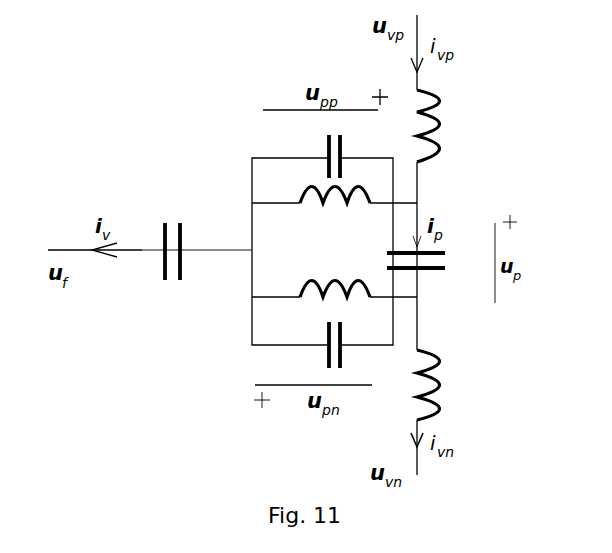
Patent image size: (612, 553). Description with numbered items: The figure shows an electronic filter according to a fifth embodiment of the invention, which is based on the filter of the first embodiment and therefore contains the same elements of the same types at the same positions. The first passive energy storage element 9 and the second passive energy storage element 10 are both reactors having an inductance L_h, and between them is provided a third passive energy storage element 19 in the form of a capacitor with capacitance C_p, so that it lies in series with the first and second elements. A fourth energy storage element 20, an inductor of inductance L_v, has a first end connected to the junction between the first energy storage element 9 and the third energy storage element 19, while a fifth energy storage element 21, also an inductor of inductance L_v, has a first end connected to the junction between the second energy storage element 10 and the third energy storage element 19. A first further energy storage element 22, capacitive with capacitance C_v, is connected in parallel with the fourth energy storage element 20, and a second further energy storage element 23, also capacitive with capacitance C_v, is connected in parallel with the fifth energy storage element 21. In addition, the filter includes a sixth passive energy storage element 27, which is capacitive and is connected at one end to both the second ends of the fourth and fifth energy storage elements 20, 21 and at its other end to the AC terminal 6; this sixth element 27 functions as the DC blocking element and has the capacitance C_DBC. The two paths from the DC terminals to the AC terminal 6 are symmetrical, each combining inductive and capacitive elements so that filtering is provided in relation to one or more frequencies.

The AC terminal 6 is at (70, 250).
The first passive energy storage element 9 is at (437, 97).
The second passive energy storage element 10 is at (437, 370).
The third passive energy storage element 19 is at (443, 250).
The fourth energy storage element 20 is at (335, 200).
The fifth energy storage element 21 is at (300, 297).
The first further energy storage element 22 is at (322, 160).
The second further energy storage element 23 is at (323, 352).
The sixth passive energy storage element 27 is at (165, 230).